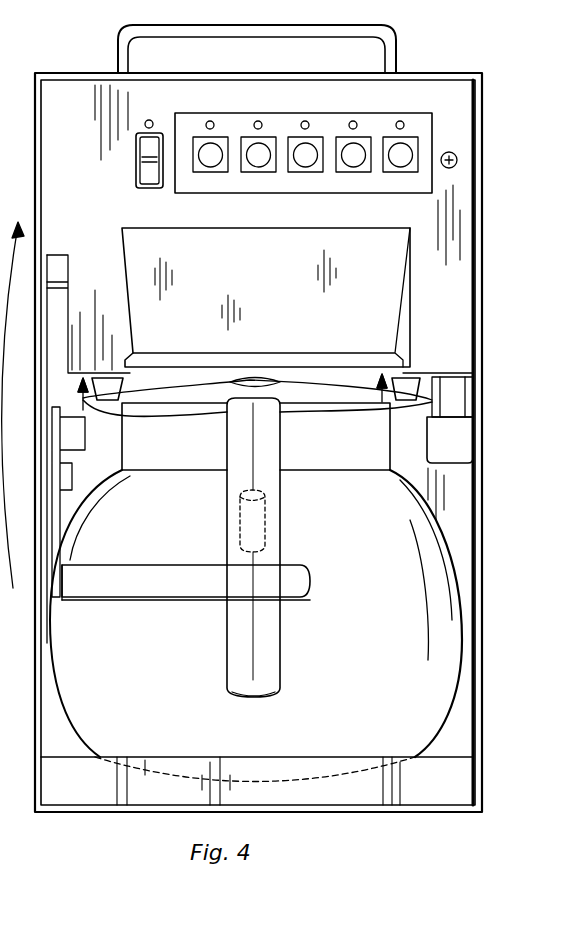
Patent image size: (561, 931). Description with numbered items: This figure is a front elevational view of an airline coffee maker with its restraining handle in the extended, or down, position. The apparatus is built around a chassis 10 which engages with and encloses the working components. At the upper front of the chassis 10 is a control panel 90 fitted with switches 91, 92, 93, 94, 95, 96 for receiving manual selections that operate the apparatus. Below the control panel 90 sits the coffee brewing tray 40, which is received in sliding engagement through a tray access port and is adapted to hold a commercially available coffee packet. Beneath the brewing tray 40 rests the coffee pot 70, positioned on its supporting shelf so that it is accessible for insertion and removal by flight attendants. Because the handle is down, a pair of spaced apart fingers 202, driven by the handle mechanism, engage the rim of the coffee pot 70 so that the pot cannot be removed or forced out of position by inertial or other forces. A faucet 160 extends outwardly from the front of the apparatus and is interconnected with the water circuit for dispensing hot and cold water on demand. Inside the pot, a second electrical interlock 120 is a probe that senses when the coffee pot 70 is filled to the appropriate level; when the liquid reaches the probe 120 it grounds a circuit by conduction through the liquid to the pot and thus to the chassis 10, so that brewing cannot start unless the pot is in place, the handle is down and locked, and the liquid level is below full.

The chassis 10 is at (413, 72).
The control panel 90 is at (425, 127).
The switch 91 is at (137, 172).
The switch 92 is at (218, 147).
The switch 93 is at (267, 163).
The switch 94 is at (314, 147).
The switch 95 is at (358, 160).
The switch 96 is at (407, 147).
The coffee brewing tray 40 is at (385, 290).
The spaced apart fingers 202 is at (413, 378).
The faucet 160 is at (466, 450).
The coffee pot 70 is at (433, 648).
The second electrical interlock 120 is at (262, 527).